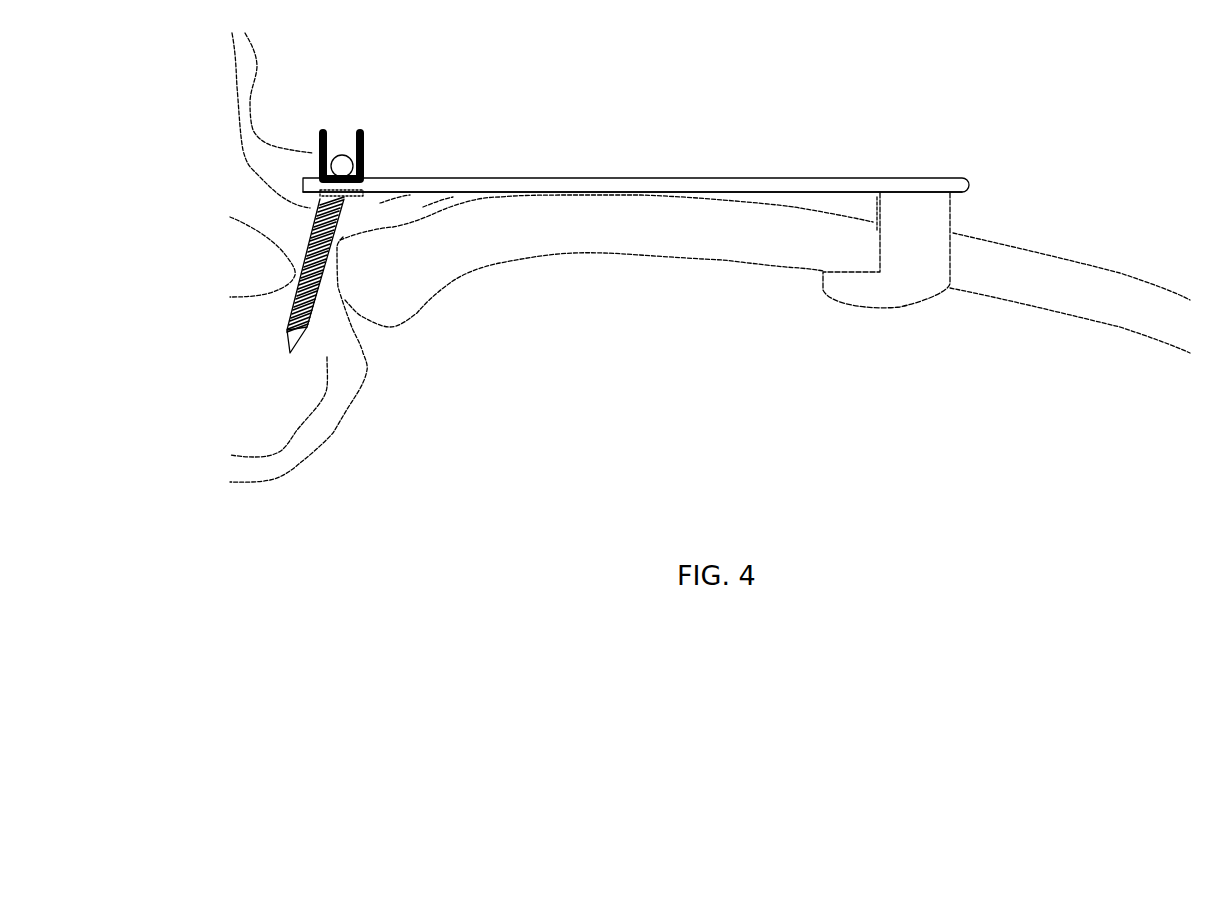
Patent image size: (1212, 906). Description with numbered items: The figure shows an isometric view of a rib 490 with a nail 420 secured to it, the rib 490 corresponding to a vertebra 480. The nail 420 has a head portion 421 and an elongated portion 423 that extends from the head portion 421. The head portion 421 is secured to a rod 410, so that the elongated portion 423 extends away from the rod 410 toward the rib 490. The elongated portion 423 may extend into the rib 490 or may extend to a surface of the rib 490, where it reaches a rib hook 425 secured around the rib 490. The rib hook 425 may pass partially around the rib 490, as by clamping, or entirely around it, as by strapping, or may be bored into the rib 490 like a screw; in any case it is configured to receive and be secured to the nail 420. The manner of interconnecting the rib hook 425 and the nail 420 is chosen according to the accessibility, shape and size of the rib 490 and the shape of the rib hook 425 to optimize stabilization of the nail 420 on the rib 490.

The rod 410 is at (338, 167).
The nail 420 is at (408, 177).
The head portion 421 is at (303, 189).
The elongated portion 423 is at (497, 186).
The rib hook 425 is at (918, 210).
The vertebra 480 is at (335, 441).
The rib 490 is at (785, 260).